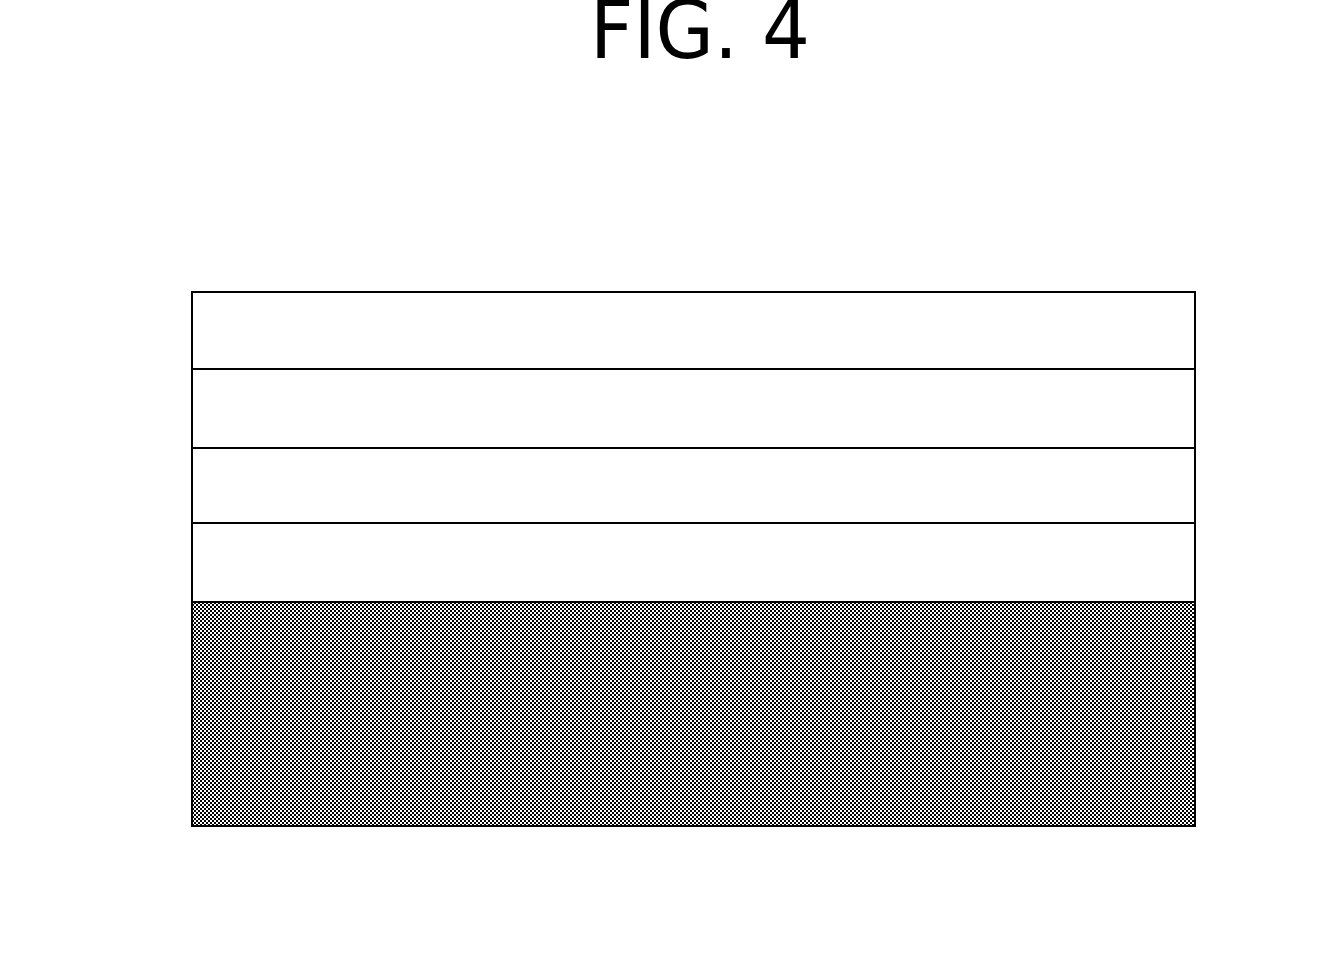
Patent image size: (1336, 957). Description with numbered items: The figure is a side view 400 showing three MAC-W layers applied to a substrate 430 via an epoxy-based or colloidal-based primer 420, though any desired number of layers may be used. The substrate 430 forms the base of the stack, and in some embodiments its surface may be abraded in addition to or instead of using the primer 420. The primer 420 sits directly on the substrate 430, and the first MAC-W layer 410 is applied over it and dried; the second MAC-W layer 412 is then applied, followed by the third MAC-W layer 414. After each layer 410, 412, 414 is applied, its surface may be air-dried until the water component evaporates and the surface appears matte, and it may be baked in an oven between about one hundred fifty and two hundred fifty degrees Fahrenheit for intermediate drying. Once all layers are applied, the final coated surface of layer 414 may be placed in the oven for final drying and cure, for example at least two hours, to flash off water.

The side view 400 is at (154, 192).
The MAC-W layer 414 is at (1195, 329).
The MAC-W layer 412 is at (1195, 410).
The MAC-W layer 410 is at (1195, 483).
The epoxy-based or colloidal-based primer 420 is at (1195, 568).
The substrate 430 is at (1195, 717).